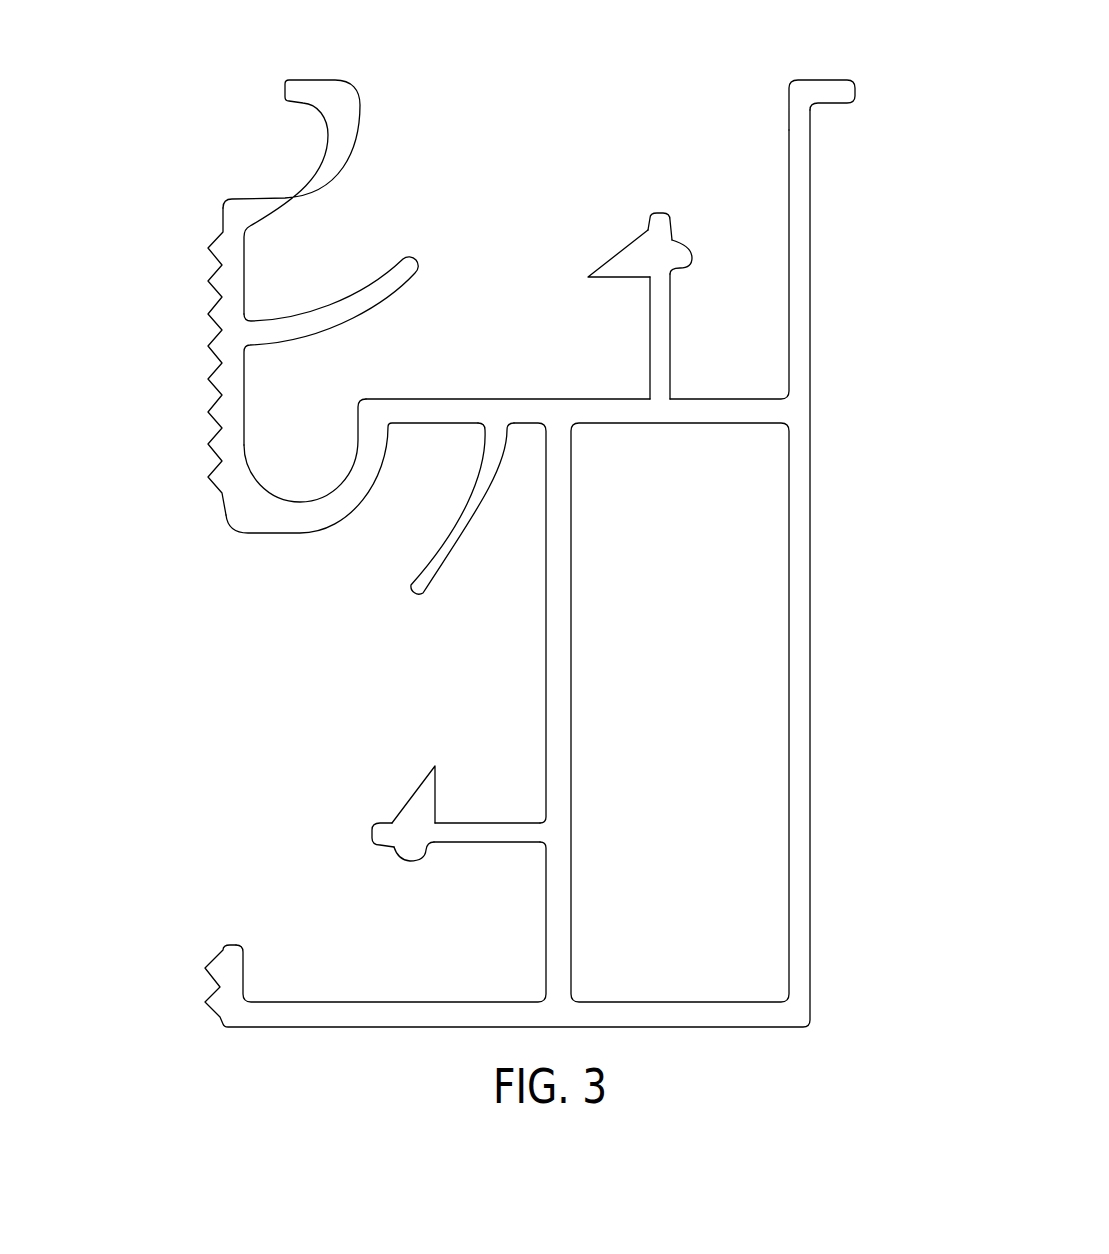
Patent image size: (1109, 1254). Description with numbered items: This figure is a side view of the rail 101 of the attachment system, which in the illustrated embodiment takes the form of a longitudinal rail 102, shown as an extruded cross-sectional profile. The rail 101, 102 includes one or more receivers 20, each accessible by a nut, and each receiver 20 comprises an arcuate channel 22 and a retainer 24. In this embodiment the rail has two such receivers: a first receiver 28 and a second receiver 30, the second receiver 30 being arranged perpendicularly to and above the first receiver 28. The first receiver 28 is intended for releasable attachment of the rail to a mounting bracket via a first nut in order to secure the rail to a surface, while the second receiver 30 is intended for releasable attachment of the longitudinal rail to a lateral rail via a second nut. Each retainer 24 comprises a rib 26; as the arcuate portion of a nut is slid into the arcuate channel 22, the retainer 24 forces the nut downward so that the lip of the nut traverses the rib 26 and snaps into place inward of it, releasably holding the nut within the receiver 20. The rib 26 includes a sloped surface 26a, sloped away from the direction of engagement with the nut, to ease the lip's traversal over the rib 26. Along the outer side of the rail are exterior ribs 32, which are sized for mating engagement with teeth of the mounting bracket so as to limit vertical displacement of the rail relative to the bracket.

The rail 101 is at (404, 51).
The longitudinal rail 102 is at (807, 35).
The receiver 20 is at (542, 152).
The arcuate channel 22 is at (342, 266).
The retainer 24 is at (660, 278).
The rib 26 is at (690, 260).
The sloped surface 26a is at (675, 238).
The first receiver 28 is at (355, 667).
The second receiver 30 is at (495, 150).
The exterior ribs 32 is at (207, 363).